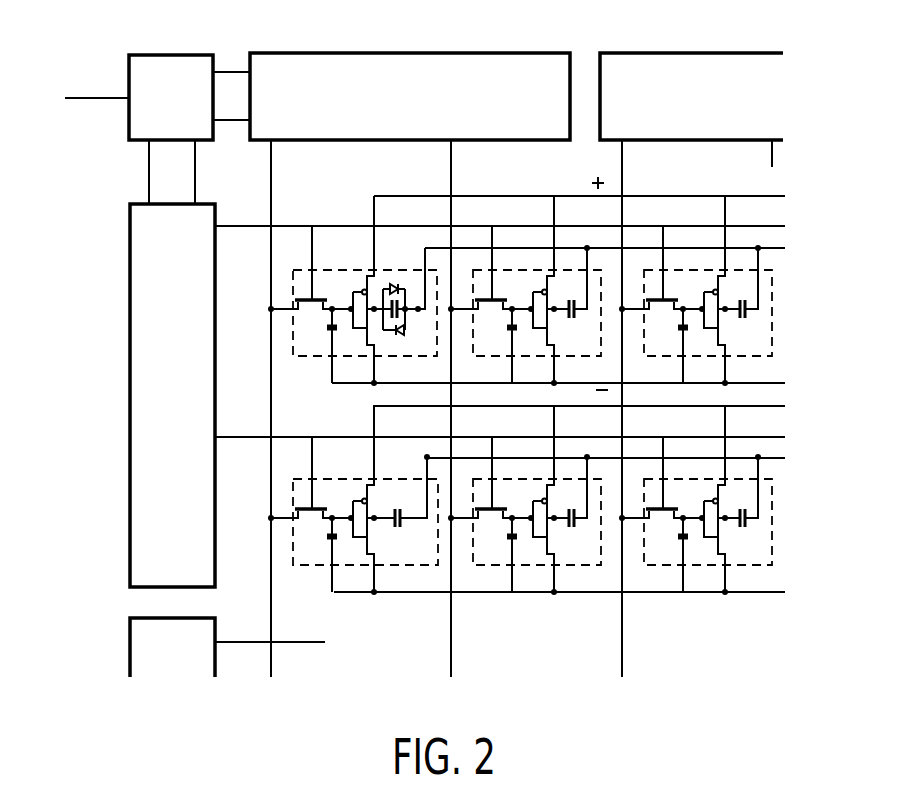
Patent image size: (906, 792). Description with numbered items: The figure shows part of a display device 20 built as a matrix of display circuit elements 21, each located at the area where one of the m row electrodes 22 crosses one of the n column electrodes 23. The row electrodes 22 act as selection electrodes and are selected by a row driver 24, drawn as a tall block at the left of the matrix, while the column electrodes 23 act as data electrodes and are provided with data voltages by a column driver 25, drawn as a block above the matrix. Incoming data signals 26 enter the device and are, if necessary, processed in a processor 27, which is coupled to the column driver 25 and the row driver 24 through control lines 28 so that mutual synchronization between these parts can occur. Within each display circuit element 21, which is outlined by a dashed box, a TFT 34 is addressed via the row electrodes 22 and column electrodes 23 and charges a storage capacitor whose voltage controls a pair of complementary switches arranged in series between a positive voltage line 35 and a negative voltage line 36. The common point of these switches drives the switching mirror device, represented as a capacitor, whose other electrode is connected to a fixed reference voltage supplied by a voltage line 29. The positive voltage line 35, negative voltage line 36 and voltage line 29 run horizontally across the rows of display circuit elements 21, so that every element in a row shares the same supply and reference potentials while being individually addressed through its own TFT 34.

The display device 20 is at (118, 451).
The display circuit element 21 is at (331, 478).
The row electrodes 22 is at (338, 226).
The column electrodes 23 is at (272, 204).
The row driver 24 is at (138, 354).
The column driver 25 is at (474, 62).
The incoming data signals 26 is at (88, 98).
The processor 27 is at (166, 60).
The control lines 28 is at (226, 72).
The voltage line 29 is at (423, 253).
The TFT 34 is at (303, 300).
The positive voltage line 35 is at (406, 196).
The negative voltage line 36 is at (765, 383).